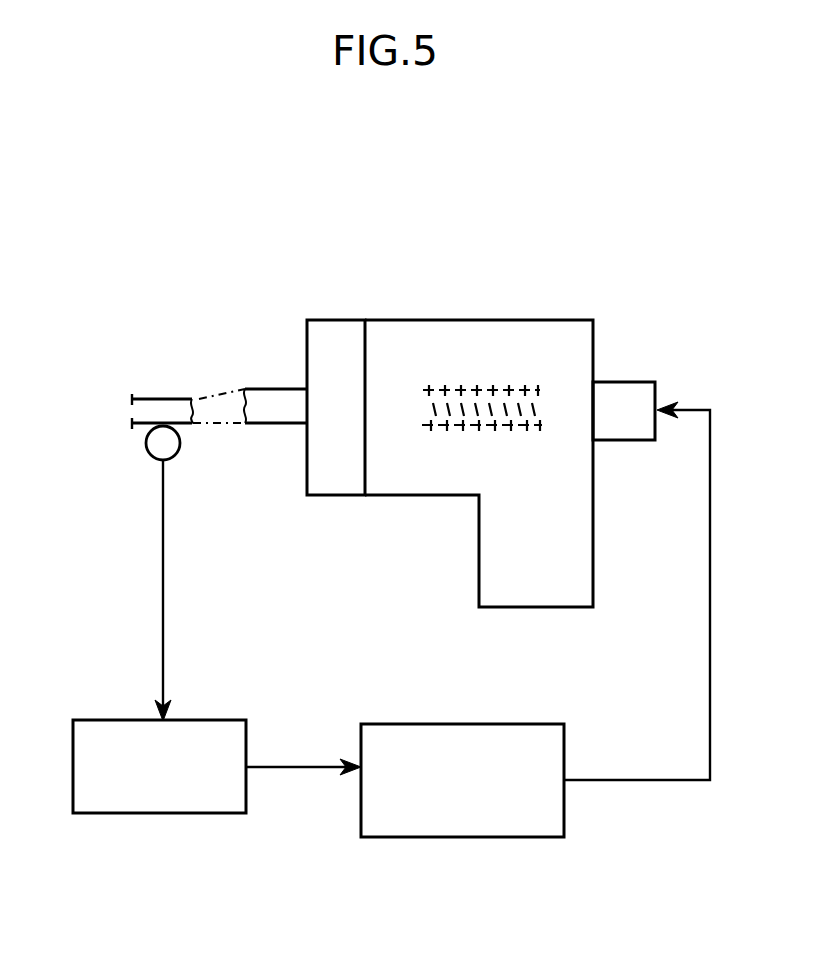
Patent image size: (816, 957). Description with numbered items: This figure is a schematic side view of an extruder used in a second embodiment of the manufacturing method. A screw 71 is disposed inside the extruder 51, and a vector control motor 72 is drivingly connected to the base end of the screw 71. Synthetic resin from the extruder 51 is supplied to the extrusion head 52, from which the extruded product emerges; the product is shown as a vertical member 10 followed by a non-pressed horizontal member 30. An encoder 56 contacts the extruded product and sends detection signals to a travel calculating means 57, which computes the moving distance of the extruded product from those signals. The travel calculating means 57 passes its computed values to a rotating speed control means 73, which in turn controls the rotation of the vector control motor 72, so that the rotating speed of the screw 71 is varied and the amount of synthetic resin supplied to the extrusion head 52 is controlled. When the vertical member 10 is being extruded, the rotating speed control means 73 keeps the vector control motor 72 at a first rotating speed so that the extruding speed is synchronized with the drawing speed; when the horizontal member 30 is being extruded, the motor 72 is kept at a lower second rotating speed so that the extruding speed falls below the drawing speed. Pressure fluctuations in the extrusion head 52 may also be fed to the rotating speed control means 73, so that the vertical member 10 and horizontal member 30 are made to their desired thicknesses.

The vertical member 10 is at (268, 388).
The non-pressed horizontal member 30 is at (158, 397).
The extruder 51 is at (556, 327).
The extrusion head 52 is at (337, 325).
The encoder 56 is at (146, 452).
The travel calculating means 57 is at (197, 815).
The screw 71 is at (466, 386).
The vector control motor 72 is at (633, 384).
The rotating speed control means 73 is at (380, 843).